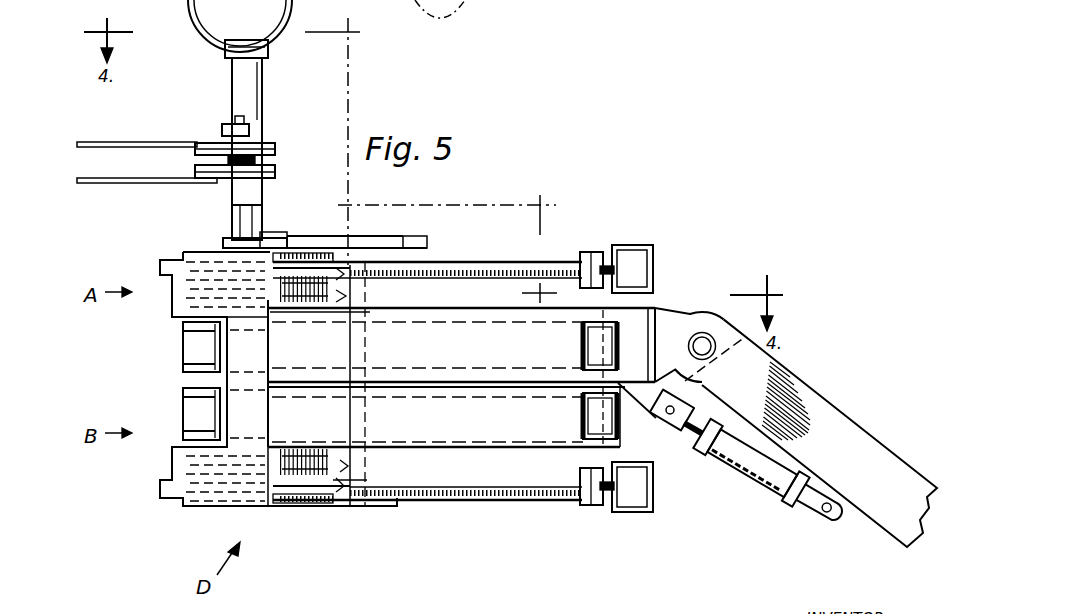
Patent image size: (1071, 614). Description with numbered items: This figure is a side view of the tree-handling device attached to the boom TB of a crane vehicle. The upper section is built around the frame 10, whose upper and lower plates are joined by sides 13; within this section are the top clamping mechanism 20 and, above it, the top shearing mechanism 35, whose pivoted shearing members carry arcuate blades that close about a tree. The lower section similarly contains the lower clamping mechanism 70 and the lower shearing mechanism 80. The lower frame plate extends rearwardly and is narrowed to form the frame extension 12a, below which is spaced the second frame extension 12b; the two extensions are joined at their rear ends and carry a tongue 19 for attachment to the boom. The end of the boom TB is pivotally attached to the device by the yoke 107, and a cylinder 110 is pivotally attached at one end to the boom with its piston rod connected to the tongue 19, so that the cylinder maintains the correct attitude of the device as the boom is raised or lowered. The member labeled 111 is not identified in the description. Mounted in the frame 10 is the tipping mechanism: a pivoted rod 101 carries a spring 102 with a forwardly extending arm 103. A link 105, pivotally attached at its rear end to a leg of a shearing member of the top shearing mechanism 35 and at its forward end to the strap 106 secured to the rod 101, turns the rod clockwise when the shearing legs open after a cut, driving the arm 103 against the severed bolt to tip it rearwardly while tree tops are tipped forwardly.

The frame 10 is at (202, 240).
The frame extension 12a is at (433, 310).
The second frame extension 12b is at (440, 380).
The sides 13 is at (203, 278).
The tongue 19 is at (656, 398).
The top clamping mechanism 20 is at (178, 347).
The top shearing mechanism 35 is at (568, 245).
The lower clamping mechanism 70 is at (178, 420).
The lower shearing mechanism 80 is at (432, 512).
The pivoted rod 101 is at (262, 215).
The spring 102 is at (270, 148).
The arm 103 is at (138, 178).
The link 105 is at (378, 240).
The strap 106 is at (256, 236).
The yoke 107 is at (700, 312).
The cylinder 110 is at (760, 488).
The clevis 111 is at (680, 446).
The boom TB is at (842, 413).